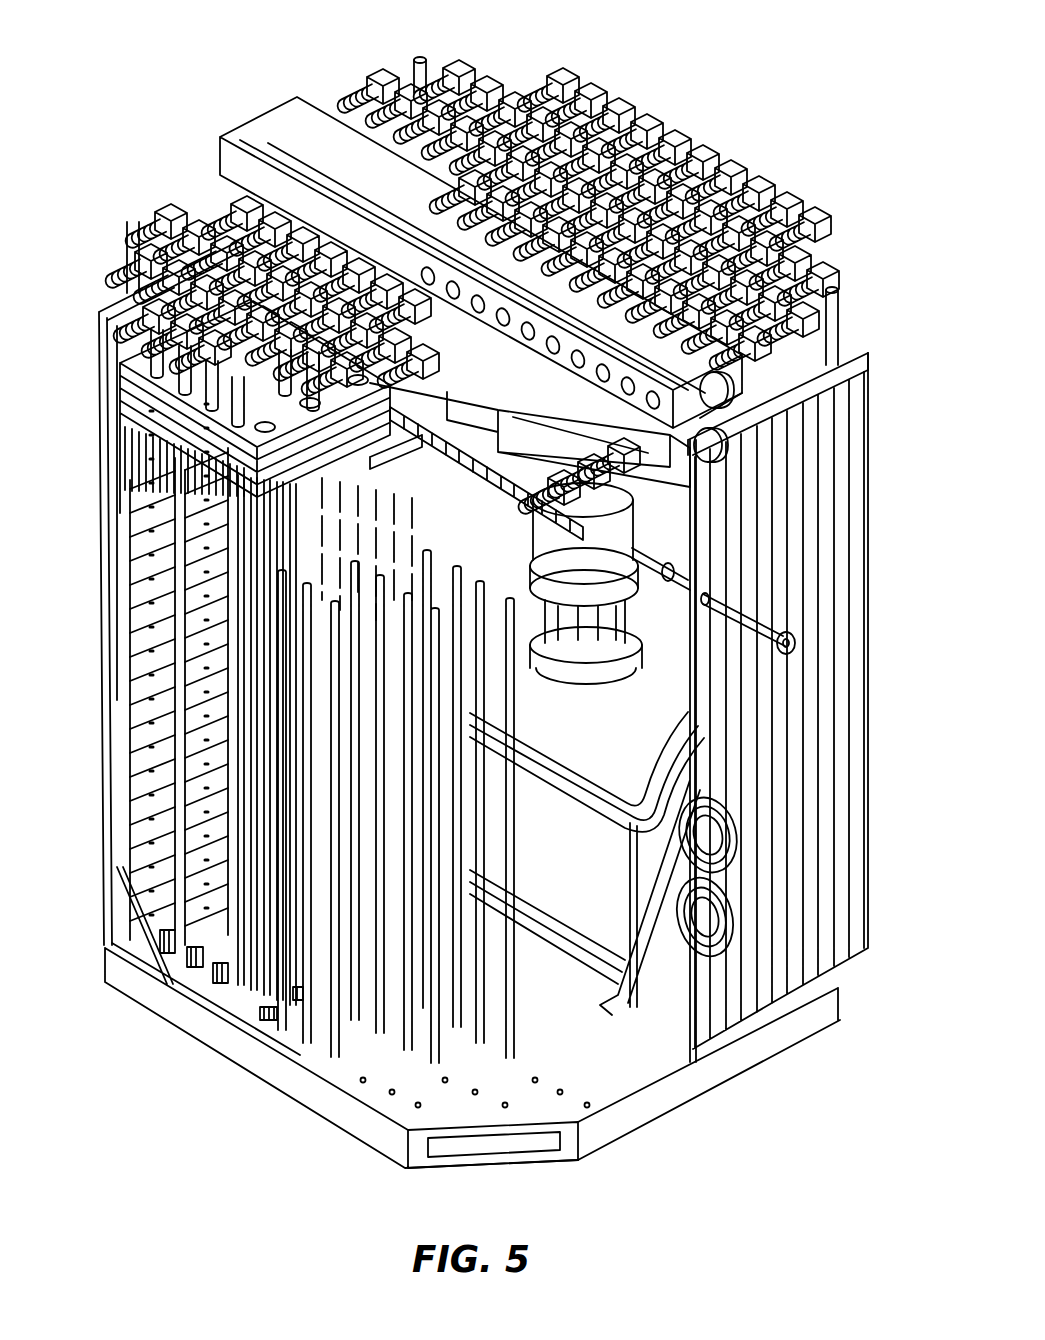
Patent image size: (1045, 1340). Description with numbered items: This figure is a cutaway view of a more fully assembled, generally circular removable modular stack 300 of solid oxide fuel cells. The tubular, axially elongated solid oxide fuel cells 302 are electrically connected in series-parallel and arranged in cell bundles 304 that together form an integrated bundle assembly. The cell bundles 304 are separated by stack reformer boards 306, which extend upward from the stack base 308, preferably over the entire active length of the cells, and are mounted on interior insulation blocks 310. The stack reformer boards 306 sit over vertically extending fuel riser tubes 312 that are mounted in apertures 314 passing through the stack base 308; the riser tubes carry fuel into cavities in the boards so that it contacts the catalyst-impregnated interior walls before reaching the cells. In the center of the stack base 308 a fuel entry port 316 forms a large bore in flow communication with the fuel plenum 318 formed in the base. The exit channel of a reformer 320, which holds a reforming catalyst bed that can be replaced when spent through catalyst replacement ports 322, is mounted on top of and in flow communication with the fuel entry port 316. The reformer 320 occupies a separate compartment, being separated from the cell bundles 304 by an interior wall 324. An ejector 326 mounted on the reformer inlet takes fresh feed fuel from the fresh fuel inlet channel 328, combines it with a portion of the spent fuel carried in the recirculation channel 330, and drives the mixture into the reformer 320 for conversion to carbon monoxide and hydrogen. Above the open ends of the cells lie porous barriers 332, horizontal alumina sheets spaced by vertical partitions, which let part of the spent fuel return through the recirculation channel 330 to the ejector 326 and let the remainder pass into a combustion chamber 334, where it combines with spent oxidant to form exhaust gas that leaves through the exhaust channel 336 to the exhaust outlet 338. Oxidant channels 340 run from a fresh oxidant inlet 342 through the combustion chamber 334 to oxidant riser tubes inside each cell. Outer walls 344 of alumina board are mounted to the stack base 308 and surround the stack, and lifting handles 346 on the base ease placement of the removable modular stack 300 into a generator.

The removable modular stack 300 is at (241, 92).
The solid oxide fuel cells 302 is at (265, 742).
The cell bundles 304 is at (243, 803).
The stack reformer boards 306 is at (340, 510).
The stack base 308 is at (365, 1135).
The interior insulation blocks 310 is at (220, 1008).
The fuel riser tubes 312 is at (476, 1095).
The apertures 314 is at (592, 1104).
The fuel entry port 316 is at (486, 1050).
The fuel plenum 318 is at (815, 1005).
The reformer 320 is at (580, 903).
The catalyst replacement ports 322 is at (730, 905).
The interior wall 324 is at (448, 566).
The ejector 326 is at (612, 620).
The fresh fuel inlet channel 328 is at (800, 652).
The recirculation channel 330 is at (170, 494).
The porous barriers 332 is at (378, 396).
The combustion chamber 334 is at (330, 368).
The exhaust channel 336 is at (122, 428).
The exhaust outlet 338 is at (725, 462).
The oxidant channels 340 is at (145, 352).
The fresh oxidant inlet 342 is at (762, 410).
The outer walls 344 is at (822, 790).
The lifting handles 346 is at (519, 1152).